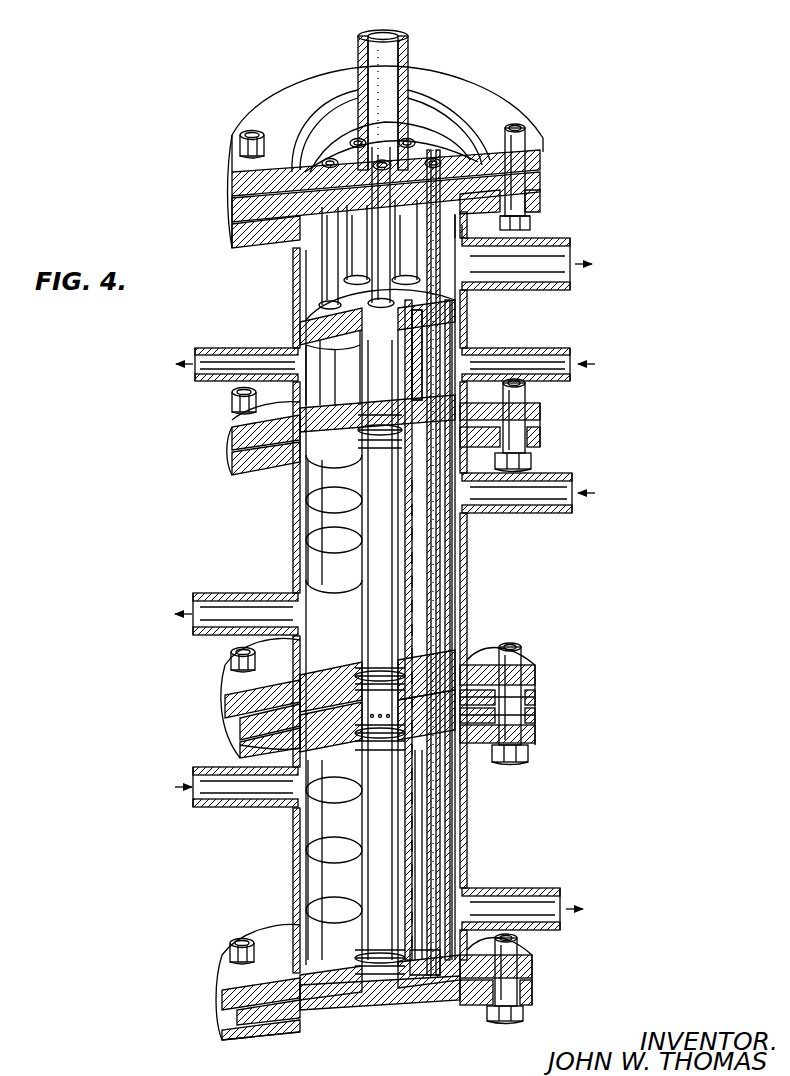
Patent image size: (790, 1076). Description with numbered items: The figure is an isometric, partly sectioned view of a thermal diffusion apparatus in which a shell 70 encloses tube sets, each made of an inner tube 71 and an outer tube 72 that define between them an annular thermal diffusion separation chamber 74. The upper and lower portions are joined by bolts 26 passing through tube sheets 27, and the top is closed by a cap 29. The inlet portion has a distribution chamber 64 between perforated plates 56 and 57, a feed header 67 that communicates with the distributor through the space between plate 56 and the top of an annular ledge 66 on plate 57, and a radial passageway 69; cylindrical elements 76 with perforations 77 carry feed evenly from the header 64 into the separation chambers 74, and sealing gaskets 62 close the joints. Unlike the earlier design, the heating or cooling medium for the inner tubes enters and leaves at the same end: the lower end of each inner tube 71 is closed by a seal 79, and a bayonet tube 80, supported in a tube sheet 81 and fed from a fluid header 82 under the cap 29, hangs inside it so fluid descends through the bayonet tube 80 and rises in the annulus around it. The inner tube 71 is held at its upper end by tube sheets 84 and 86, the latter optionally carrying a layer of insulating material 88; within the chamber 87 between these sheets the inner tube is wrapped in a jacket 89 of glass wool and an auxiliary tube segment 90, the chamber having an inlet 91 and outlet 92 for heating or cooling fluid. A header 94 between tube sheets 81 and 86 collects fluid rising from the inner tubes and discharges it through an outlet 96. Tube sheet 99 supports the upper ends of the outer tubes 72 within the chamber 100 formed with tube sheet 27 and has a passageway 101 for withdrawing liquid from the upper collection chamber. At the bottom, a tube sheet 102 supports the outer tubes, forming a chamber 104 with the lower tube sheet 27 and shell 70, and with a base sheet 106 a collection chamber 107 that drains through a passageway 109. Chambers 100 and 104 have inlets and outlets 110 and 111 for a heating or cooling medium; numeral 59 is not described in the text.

The bolts 26 is at (518, 668).
The tube sheets 27 is at (530, 676).
The cap 29 is at (427, 158).
The perforated plate 56 is at (530, 692).
The perforated plate 57 is at (530, 712).
The seal ring 59 is at (530, 700).
The sealing gaskets 62 is at (345, 684).
The distribution chamber 64 is at (302, 672).
The annular ledge 66 is at (308, 706).
The feed header 67 is at (297, 707).
The radial passageway 69 is at (285, 748).
The shell 70 is at (468, 562).
The inner tube 71 is at (440, 603).
The outer tube 72 is at (452, 592).
The annular thermal diffusion separation chamber 74 is at (445, 800).
The cylindrical elements 76 is at (528, 738).
The perforations 77 is at (380, 668).
The seal 79 is at (428, 985).
The bayonet tube 80 is at (440, 836).
The tube sheet 81 is at (535, 186).
The fluid header 82 is at (425, 148).
The tube sheet 84 is at (538, 412).
The tube sheet 86 is at (455, 308).
The chamber 87 is at (412, 350).
The layer of insulating material 88 is at (322, 335).
The jacket 89 is at (448, 340).
The auxiliary tube segment 90 is at (440, 405).
The inlet 91 is at (320, 435).
The outlet 92 is at (232, 340).
The header 94 is at (452, 264).
The outlet 96 is at (555, 260).
The tube sheet 99 is at (535, 440).
The chamber 100 is at (300, 560).
The passageway 101 is at (262, 470).
The tube sheet 102 is at (290, 992).
The chamber 104 is at (302, 850).
The base sheet 106 is at (535, 992).
The collection chamber 107 is at (402, 990).
The passageway 109 is at (297, 1022).
The inlets 110 is at (545, 512).
The outlets 111 is at (216, 604).